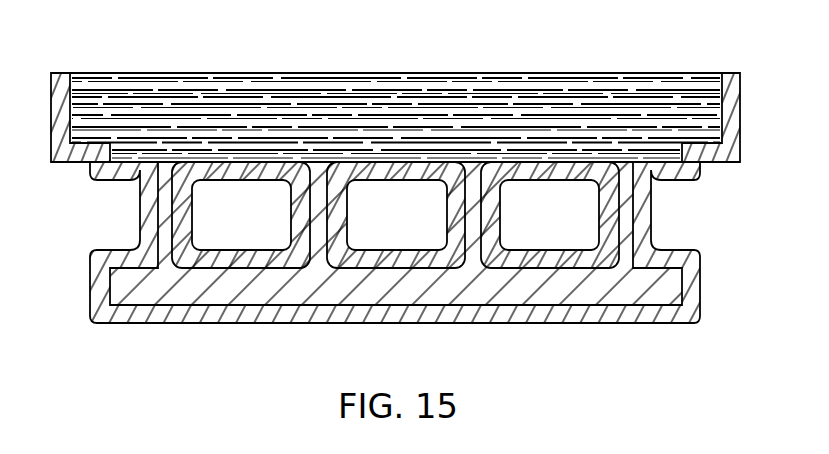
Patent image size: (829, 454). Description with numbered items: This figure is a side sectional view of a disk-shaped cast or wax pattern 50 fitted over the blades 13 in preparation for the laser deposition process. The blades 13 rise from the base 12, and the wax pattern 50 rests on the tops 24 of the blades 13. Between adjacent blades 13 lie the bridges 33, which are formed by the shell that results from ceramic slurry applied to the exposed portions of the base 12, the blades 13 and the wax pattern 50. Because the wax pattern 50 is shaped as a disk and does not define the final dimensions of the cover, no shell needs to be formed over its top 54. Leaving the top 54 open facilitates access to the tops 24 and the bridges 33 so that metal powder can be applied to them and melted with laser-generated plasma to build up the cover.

The base 12 is at (203, 298).
The blades 13 is at (625, 219).
The tops of the blades 24 is at (623, 163).
The bridges 33 is at (228, 162).
The wax pattern 50 is at (563, 95).
The top of the wax pattern 54 is at (220, 73).